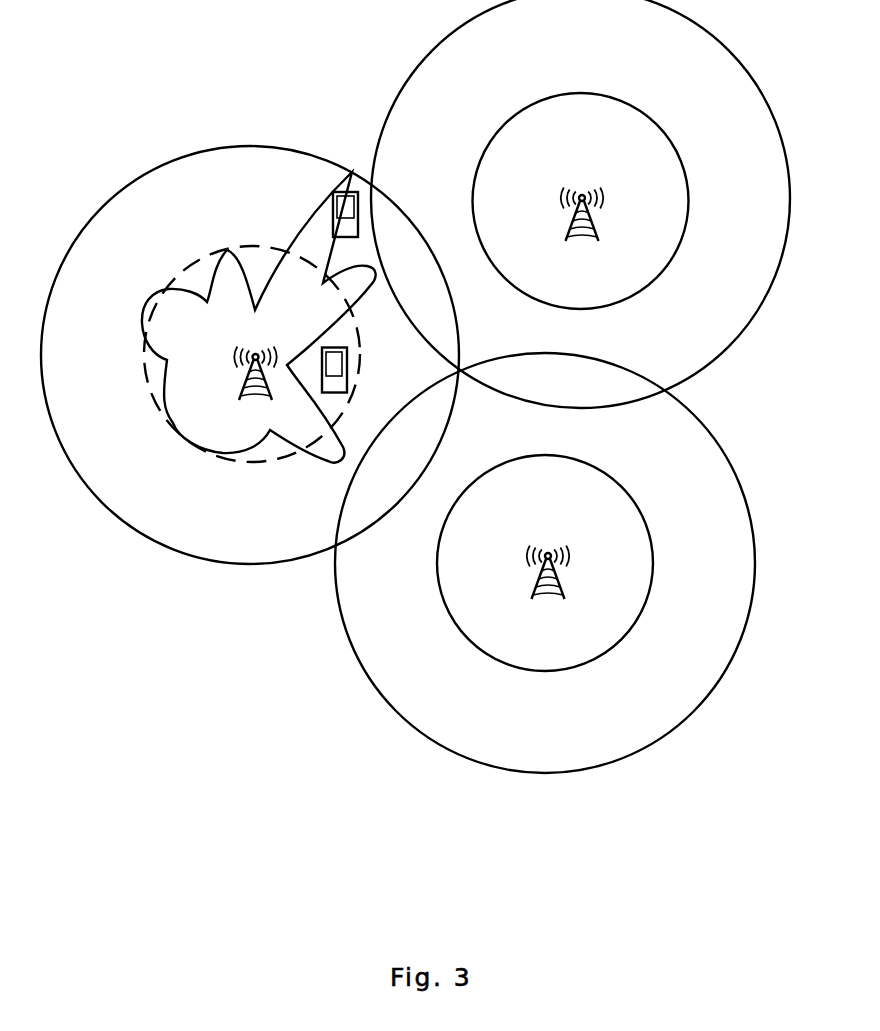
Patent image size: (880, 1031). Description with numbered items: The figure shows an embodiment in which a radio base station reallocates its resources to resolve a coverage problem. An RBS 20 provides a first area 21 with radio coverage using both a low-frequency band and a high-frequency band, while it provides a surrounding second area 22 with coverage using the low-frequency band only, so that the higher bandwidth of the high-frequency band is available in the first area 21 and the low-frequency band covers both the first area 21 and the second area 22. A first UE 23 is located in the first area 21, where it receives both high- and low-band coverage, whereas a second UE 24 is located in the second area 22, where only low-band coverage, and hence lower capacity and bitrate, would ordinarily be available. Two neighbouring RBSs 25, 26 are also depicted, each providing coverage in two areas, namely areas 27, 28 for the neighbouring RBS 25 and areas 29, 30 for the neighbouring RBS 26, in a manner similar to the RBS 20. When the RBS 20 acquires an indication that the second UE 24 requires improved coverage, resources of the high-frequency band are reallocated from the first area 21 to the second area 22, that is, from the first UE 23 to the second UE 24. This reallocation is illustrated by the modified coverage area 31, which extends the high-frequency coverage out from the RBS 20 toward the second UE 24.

The RBS 20 is at (262, 354).
The first area 21 is at (140, 368).
The second area 22 is at (127, 203).
The first UE 23 is at (338, 346).
The second UE 24 is at (353, 190).
The neighbouring RBS 25 is at (581, 190).
The neighbouring RBS 26 is at (548, 549).
The area 27 is at (490, 166).
The area 28 is at (460, 45).
The area 29 is at (445, 559).
The area 30 is at (364, 652).
The modified coverage area 31 is at (303, 242).